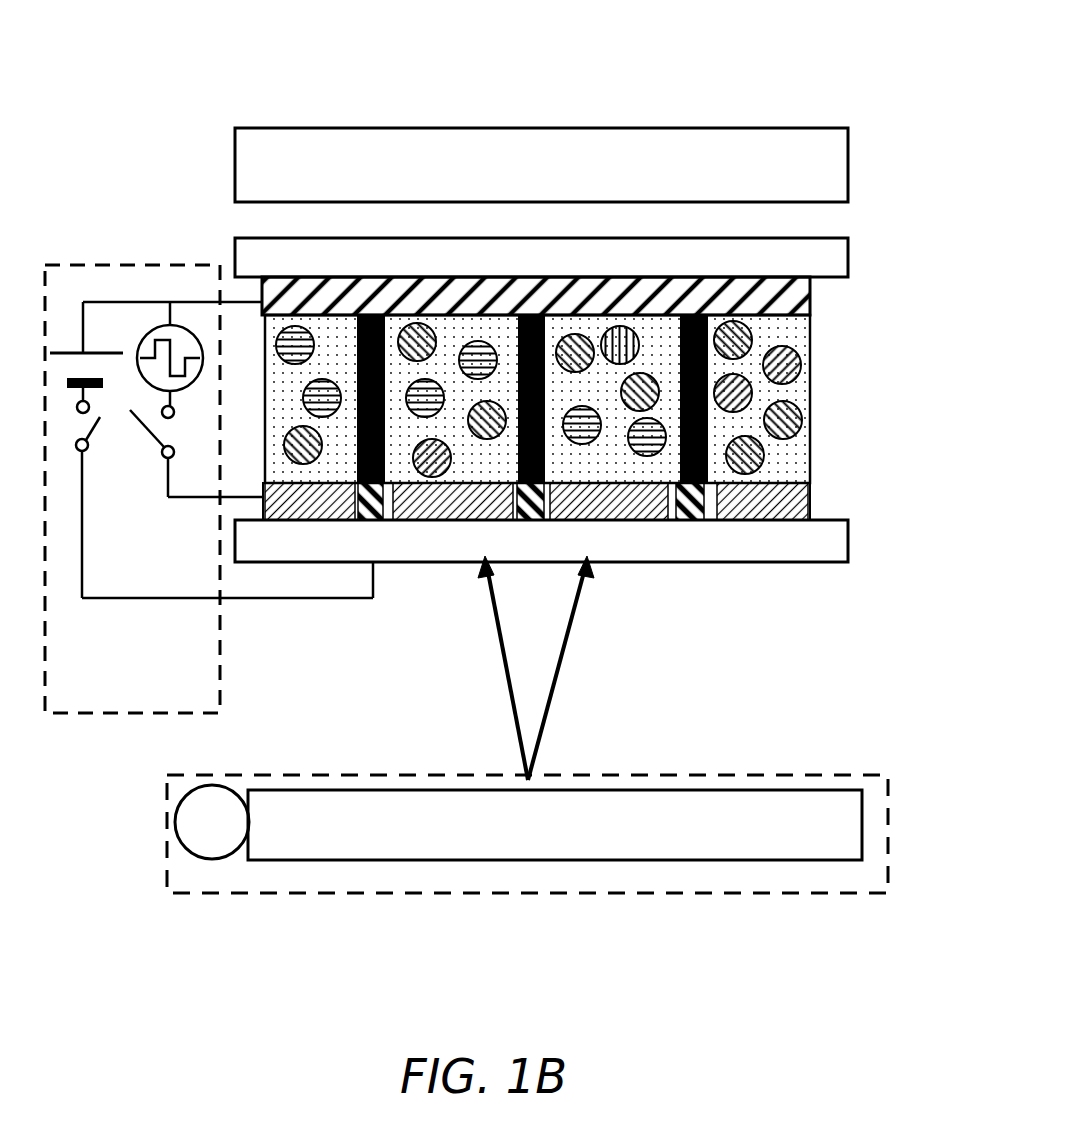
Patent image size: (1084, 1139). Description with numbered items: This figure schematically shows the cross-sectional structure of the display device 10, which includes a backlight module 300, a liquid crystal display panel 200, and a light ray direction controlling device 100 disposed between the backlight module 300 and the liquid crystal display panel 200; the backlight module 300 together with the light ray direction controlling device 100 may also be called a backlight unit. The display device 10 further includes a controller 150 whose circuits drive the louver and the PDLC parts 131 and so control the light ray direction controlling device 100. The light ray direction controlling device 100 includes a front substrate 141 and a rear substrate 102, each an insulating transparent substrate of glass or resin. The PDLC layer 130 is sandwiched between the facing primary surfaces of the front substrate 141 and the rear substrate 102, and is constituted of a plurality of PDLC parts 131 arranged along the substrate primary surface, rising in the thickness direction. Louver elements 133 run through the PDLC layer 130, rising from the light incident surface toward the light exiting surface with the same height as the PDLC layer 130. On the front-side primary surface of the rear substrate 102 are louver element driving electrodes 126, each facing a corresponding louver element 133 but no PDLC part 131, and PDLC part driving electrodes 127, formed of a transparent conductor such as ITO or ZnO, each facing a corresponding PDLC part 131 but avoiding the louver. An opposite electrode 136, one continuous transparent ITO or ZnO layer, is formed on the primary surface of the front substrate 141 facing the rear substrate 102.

The display device 10 is at (577, 81).
The liquid crystal display panel 200 is at (793, 180).
The front substrate 141 is at (747, 270).
The opposite electrode 136 is at (273, 277).
The PDLC part 131 is at (813, 345).
The PDLC layer 130 is at (606, 387).
The louver element 133 is at (548, 448).
The louver element driving electrode 126 is at (398, 503).
The PDLC part driving electrode 127 is at (803, 490).
The rear substrate 102 is at (688, 557).
The light ray direction controlling device 100 is at (729, 600).
The controller 150 is at (150, 652).
The backlight module 300 is at (593, 895).